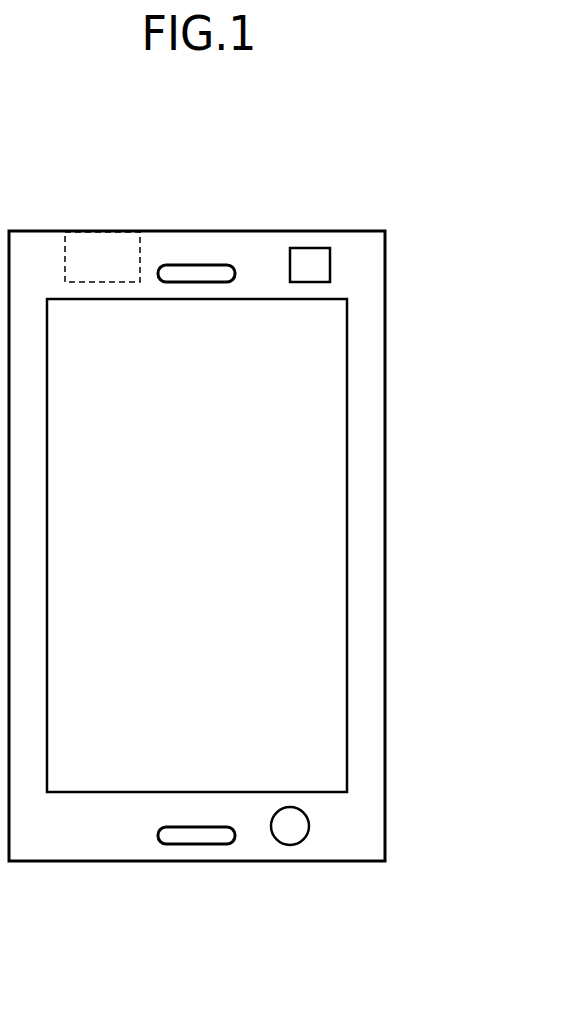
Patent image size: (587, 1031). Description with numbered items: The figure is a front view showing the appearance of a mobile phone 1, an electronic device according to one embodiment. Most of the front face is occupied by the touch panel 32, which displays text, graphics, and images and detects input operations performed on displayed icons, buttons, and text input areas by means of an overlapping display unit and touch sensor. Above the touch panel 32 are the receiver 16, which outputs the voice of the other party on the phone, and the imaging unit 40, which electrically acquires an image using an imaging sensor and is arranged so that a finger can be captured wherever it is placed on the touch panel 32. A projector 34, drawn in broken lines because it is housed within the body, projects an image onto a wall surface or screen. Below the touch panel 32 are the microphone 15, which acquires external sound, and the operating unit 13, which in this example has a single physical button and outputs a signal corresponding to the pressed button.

The mobile phone 1 is at (470, 189).
The operating unit 13 is at (290, 845).
The microphone 15 is at (195, 845).
The receiver 16 is at (195, 265).
The touch panel 32 is at (347, 463).
The projector 34 is at (103, 230).
The imaging unit 40 is at (304, 248).